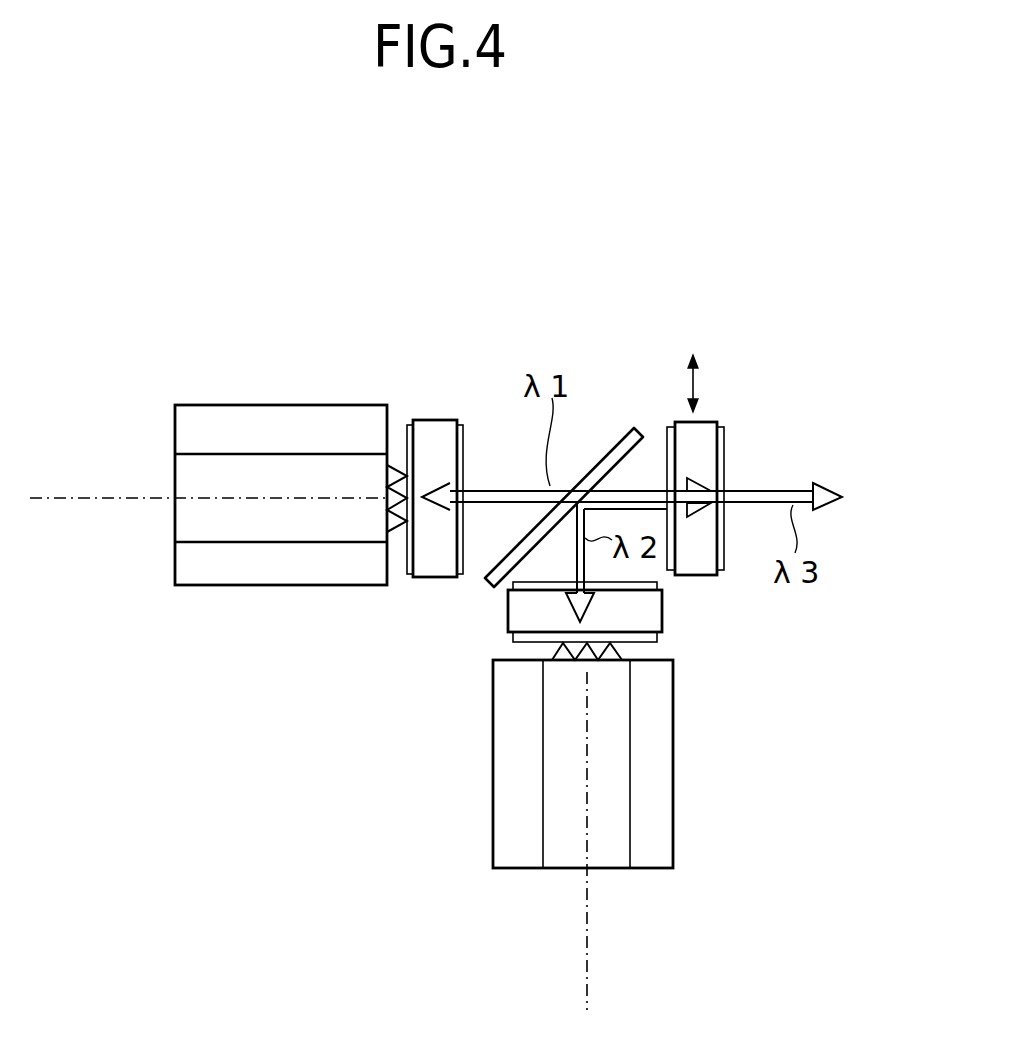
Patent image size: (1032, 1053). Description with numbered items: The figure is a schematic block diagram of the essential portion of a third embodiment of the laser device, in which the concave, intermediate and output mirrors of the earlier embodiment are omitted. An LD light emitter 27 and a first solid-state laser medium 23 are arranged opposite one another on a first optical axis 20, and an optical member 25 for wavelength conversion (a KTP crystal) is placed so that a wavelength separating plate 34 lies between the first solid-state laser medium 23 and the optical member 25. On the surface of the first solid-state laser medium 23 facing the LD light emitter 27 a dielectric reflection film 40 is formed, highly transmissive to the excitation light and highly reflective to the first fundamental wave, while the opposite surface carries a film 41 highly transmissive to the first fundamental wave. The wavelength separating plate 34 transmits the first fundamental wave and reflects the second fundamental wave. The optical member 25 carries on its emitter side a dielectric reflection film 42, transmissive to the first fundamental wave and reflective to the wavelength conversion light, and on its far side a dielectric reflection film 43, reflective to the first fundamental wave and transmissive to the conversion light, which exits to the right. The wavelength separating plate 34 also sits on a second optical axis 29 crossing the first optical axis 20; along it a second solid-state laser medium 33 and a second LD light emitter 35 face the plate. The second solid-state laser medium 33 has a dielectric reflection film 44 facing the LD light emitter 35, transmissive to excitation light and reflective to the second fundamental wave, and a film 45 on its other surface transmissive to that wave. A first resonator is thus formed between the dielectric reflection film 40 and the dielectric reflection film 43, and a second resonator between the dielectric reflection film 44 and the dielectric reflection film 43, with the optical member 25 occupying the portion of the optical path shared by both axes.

The first optical axis 20 is at (95, 500).
The LD light emitter 27 is at (249, 403).
The first solid-state laser medium 23 is at (413, 554).
The dielectric reflection film 40 is at (408, 575).
The film 41 is at (463, 437).
The wavelength separating plate 34 is at (612, 447).
The optical member for wavelength conversion 25 is at (724, 444).
The dielectric reflection film 42 is at (665, 434).
The dielectric reflection film 43 is at (725, 440).
The second solid-state laser medium 33 is at (604, 631).
The dielectric reflection film 44 is at (657, 641).
The film 45 is at (513, 630).
The LD light emitter 35 is at (673, 712).
The second optical axis 29 is at (590, 948).